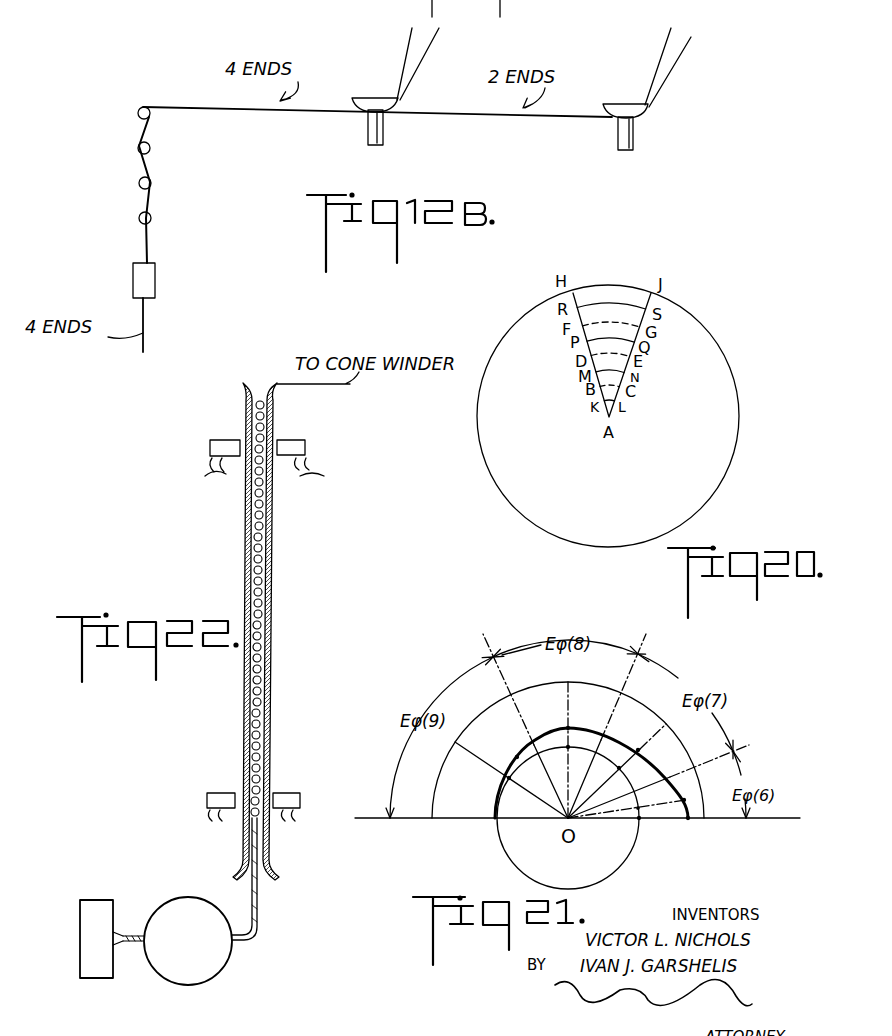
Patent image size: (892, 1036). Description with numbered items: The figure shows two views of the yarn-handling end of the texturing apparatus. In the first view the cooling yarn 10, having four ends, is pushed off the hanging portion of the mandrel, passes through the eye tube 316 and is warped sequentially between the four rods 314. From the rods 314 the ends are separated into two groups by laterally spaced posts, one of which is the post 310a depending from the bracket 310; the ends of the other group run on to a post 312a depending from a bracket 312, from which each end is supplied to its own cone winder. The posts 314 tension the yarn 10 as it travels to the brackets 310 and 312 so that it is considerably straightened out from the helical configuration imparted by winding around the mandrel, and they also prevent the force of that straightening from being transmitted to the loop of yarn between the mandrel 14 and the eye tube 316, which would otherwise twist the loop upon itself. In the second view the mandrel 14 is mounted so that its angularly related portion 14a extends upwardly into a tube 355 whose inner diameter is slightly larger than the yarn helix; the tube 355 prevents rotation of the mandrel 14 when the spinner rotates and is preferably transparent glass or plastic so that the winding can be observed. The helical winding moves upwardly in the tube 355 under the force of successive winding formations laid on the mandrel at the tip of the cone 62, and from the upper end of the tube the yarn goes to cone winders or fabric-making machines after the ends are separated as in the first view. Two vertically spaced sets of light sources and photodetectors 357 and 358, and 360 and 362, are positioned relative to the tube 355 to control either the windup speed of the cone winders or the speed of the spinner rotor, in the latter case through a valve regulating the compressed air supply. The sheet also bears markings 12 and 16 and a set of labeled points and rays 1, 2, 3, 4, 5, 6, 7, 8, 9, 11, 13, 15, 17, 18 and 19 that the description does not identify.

In FIG. 12B, the bracket 310 is at (368, 96).
In FIG. 12B, the post 310a is at (368, 133).
In FIG. 12B, the bracket 312 is at (663, 91).
In FIG. 12B, the post 312a is at (635, 135).
In FIG. 12B, the rods 314 is at (137, 148).
In FIG. 12B, the eye tube 316 is at (158, 278).
In FIG. 22, the tube 355 is at (268, 685).
In FIG. 22, the light source and photodetector 357 is at (212, 442).
In FIG. 22, the light source and photodetector 358 is at (305, 442).
In FIG. 22, the light source and photodetector 360 is at (215, 795).
In FIG. 22, the light source and photodetector 362 is at (295, 795).
In FIG. 22, the yarn source / reference point 12 is at (90, 900).
In FIG. 21, the yarn source / reference point 12 is at (652, 811).
In FIG. 22, the cone 62 is at (117, 930).
In FIG. 22, the mandrel 14 is at (133, 945).
In FIG. 21, the mandrel 14 is at (637, 773).
In FIG. 22, the angularly related portion of the mandrel 14a is at (258, 913).
In FIG. 22, the drum / reference point 16 is at (180, 985).
In FIG. 21, the drum / reference point 16 is at (582, 742).
In FIG. 21, the reference axis 1 is at (691, 821).
In FIG. 21, the reference ray 2 is at (668, 773).
In FIG. 21, the reference ray 3 is at (616, 714).
In FIG. 21, the reference ray 4 is at (522, 713).
In FIG. 21, the reference axis 5 is at (454, 810).
In FIG. 21, the outer reference circle 6 is at (575, 750).
In FIG. 21, the reference ray 7 is at (623, 761).
In FIG. 21, the reference ray 8 is at (567, 739).
In FIG. 21, the reference ray 9 is at (501, 776).
In FIG. 21, the cooling yarn 10 is at (654, 831).
In FIG. 21, the reference point 11 is at (697, 831).
In FIG. 21, the reference point 13 is at (637, 808).
In FIG. 21, the reference point 15 is at (657, 750).
In FIG. 21, the reference point 17 is at (583, 718).
In FIG. 21, the reference point 18 is at (518, 792).
In FIG. 21, the reference point 19 is at (504, 747).